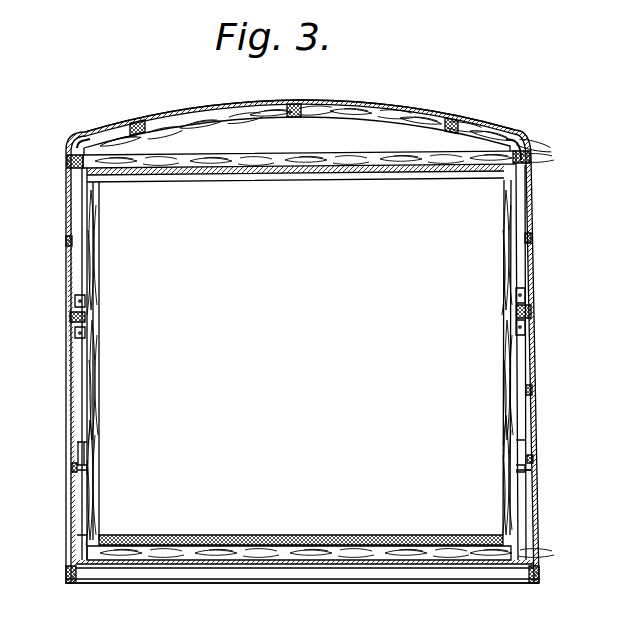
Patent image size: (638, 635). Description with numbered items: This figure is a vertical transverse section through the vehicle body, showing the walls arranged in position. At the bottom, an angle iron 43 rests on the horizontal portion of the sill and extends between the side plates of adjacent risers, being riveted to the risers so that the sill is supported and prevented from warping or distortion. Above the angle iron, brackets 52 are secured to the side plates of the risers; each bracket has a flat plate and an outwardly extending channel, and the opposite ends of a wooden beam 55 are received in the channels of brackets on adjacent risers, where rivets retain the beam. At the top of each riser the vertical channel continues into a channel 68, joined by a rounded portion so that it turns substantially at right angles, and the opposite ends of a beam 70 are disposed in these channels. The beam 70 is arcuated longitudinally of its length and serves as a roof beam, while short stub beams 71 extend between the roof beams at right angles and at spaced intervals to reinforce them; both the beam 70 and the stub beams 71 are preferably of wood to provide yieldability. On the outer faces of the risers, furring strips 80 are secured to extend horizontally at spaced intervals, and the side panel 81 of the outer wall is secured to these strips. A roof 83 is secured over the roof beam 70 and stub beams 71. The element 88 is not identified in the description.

The angle iron 43 is at (80, 476).
The bracket 52 is at (78, 301).
The wooden beam 55 is at (70, 317).
The channel 68 is at (88, 137).
The beam 70 is at (248, 112).
The stub beam 71 is at (137, 134).
The furring strip 80 is at (68, 163).
The side panel 81 is at (532, 282).
The roof 83 is at (340, 104).
The side wall 88 is at (70, 366).